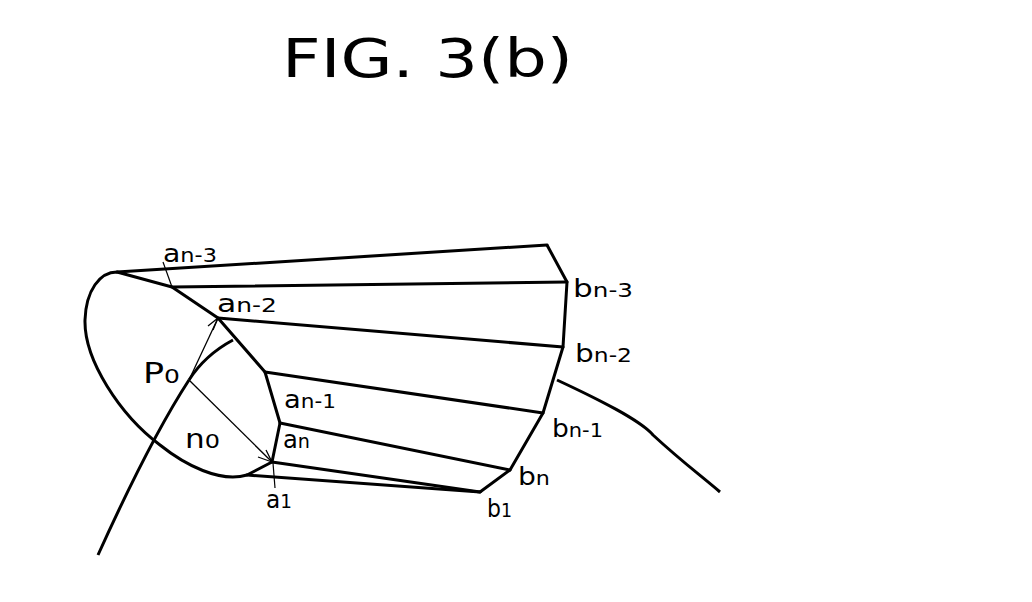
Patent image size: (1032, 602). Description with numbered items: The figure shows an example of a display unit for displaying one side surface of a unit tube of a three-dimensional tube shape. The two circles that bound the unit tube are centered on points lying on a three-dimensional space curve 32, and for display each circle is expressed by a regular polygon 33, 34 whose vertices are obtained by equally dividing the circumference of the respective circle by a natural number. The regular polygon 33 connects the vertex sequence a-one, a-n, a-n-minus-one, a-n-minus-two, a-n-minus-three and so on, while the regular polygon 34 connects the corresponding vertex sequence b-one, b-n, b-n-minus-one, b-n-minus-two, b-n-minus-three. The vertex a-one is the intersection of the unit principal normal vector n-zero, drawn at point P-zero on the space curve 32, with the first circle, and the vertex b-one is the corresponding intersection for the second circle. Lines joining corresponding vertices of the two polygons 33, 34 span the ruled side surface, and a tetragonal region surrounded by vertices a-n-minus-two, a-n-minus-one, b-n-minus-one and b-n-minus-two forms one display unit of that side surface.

The three-dimensional space curve 32 is at (656, 434).
The regular polygon 33 is at (98, 274).
The regular polygon 34 is at (548, 253).